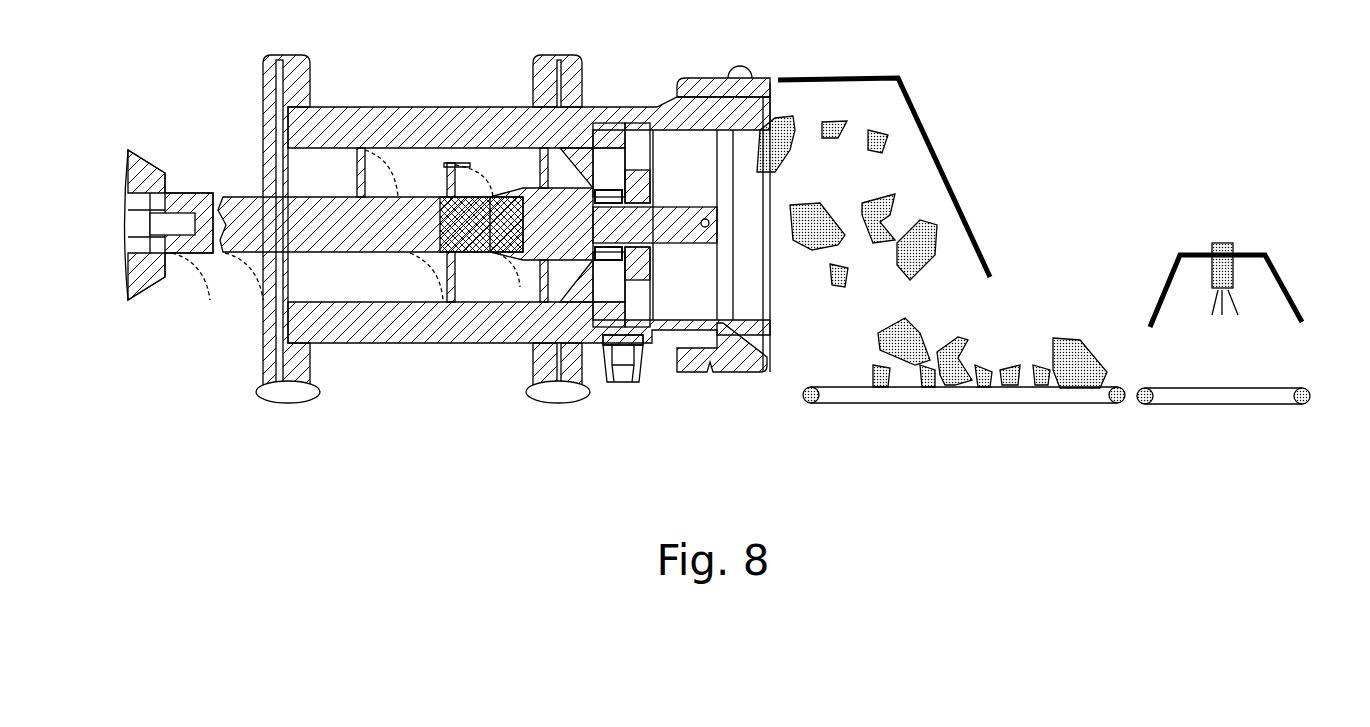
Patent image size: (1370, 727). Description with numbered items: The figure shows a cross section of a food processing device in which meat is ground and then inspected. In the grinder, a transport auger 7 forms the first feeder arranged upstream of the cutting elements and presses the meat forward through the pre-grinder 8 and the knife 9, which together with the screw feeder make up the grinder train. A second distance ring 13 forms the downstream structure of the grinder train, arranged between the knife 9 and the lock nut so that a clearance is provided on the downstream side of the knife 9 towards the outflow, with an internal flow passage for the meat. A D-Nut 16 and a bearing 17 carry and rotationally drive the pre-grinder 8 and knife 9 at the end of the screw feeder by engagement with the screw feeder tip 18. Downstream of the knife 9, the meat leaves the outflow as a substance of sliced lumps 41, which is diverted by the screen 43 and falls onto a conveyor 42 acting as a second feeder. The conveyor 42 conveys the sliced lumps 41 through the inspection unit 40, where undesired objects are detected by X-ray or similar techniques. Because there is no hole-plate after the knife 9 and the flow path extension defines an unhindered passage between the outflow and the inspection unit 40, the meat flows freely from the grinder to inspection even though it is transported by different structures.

The transport auger 7 is at (368, 227).
The pre-grinder 8 is at (608, 382).
The knife 9 is at (636, 107).
The second distance ring 13 is at (695, 105).
The D-Nut 16 is at (497, 137).
The bearing 17 is at (530, 92).
The screw feeder tip 18 is at (677, 352).
The inspection unit 40 is at (1173, 258).
The sliced lumps 41 is at (1080, 340).
The conveyor 42 is at (915, 408).
The screen 43 is at (962, 202).